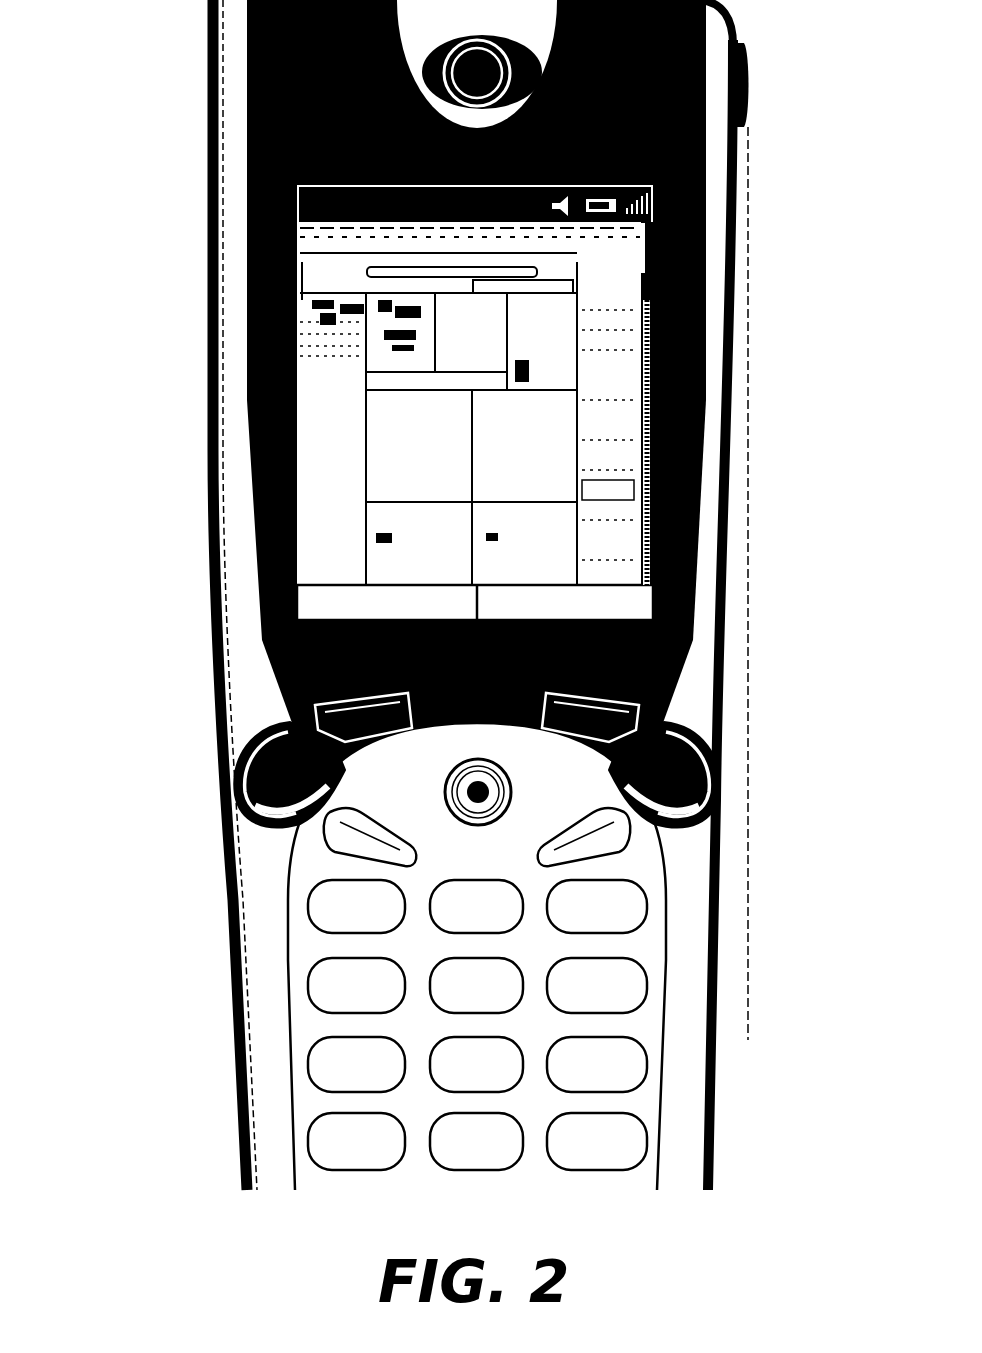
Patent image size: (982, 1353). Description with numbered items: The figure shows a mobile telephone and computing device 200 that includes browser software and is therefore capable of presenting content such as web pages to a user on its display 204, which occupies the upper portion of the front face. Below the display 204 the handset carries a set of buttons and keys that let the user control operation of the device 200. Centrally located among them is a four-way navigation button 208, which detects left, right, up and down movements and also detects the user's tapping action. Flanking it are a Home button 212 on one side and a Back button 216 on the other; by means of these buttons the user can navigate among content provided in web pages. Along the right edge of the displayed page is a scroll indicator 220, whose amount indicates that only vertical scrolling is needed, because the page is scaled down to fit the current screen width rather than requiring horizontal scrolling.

The mobile telephone and computing device 200 is at (200, 390).
The display 204 is at (300, 486).
The four-way navigation button 208 is at (455, 850).
The Home button 212 is at (318, 826).
The Back button 216 is at (648, 821).
The scroll indicator 220 is at (665, 392).